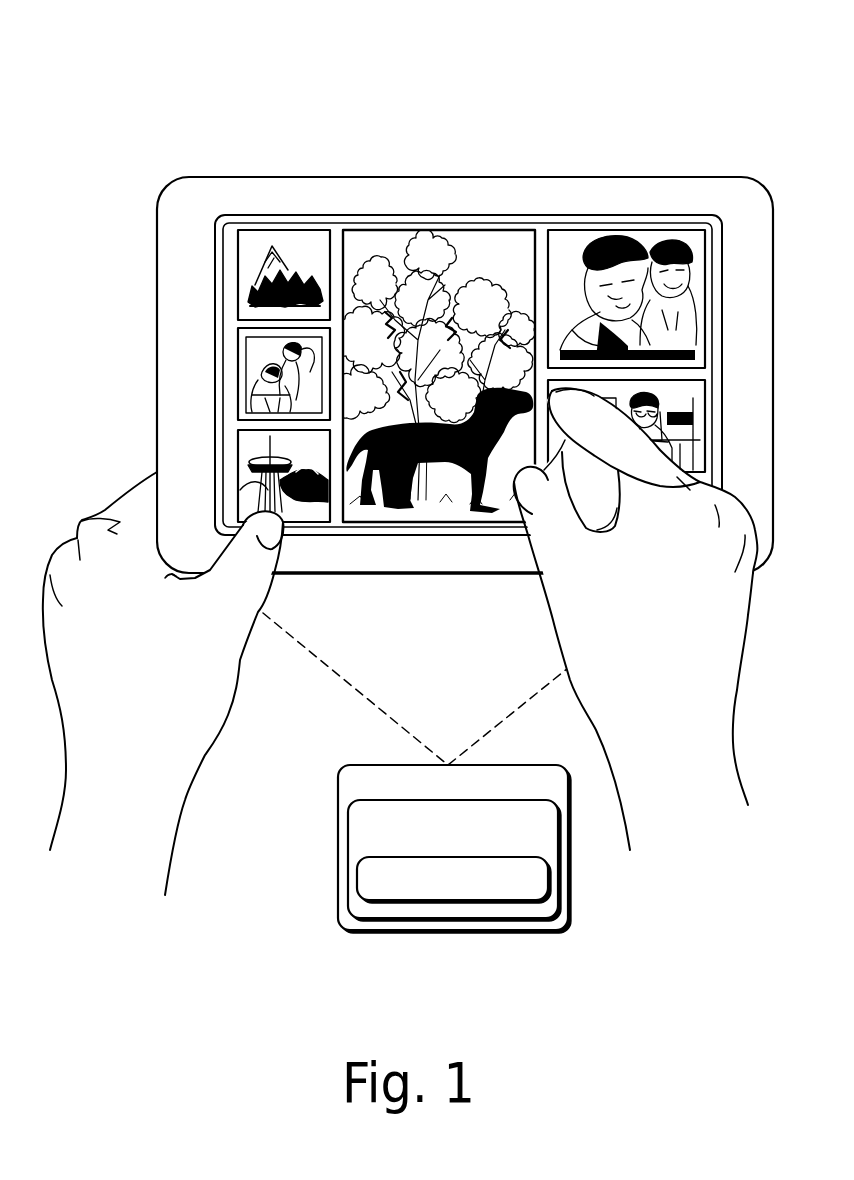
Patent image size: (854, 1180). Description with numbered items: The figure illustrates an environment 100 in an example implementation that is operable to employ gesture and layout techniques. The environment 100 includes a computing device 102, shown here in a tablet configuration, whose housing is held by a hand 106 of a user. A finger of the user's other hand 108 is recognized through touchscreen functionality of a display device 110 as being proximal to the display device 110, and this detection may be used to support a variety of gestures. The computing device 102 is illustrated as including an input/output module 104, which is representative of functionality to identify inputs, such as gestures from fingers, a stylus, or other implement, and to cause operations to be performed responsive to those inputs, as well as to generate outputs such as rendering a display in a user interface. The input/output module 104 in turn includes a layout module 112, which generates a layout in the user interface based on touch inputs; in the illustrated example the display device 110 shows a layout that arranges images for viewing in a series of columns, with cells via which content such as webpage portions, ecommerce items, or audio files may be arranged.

The environment 100 is at (147, 72).
The computing device 102 is at (465, 555).
The input/output module 104 is at (454, 860).
The hand 106 is at (163, 688).
The other hand 108 is at (636, 624).
The display device 110 is at (467, 213).
The layout module 112 is at (454, 880).